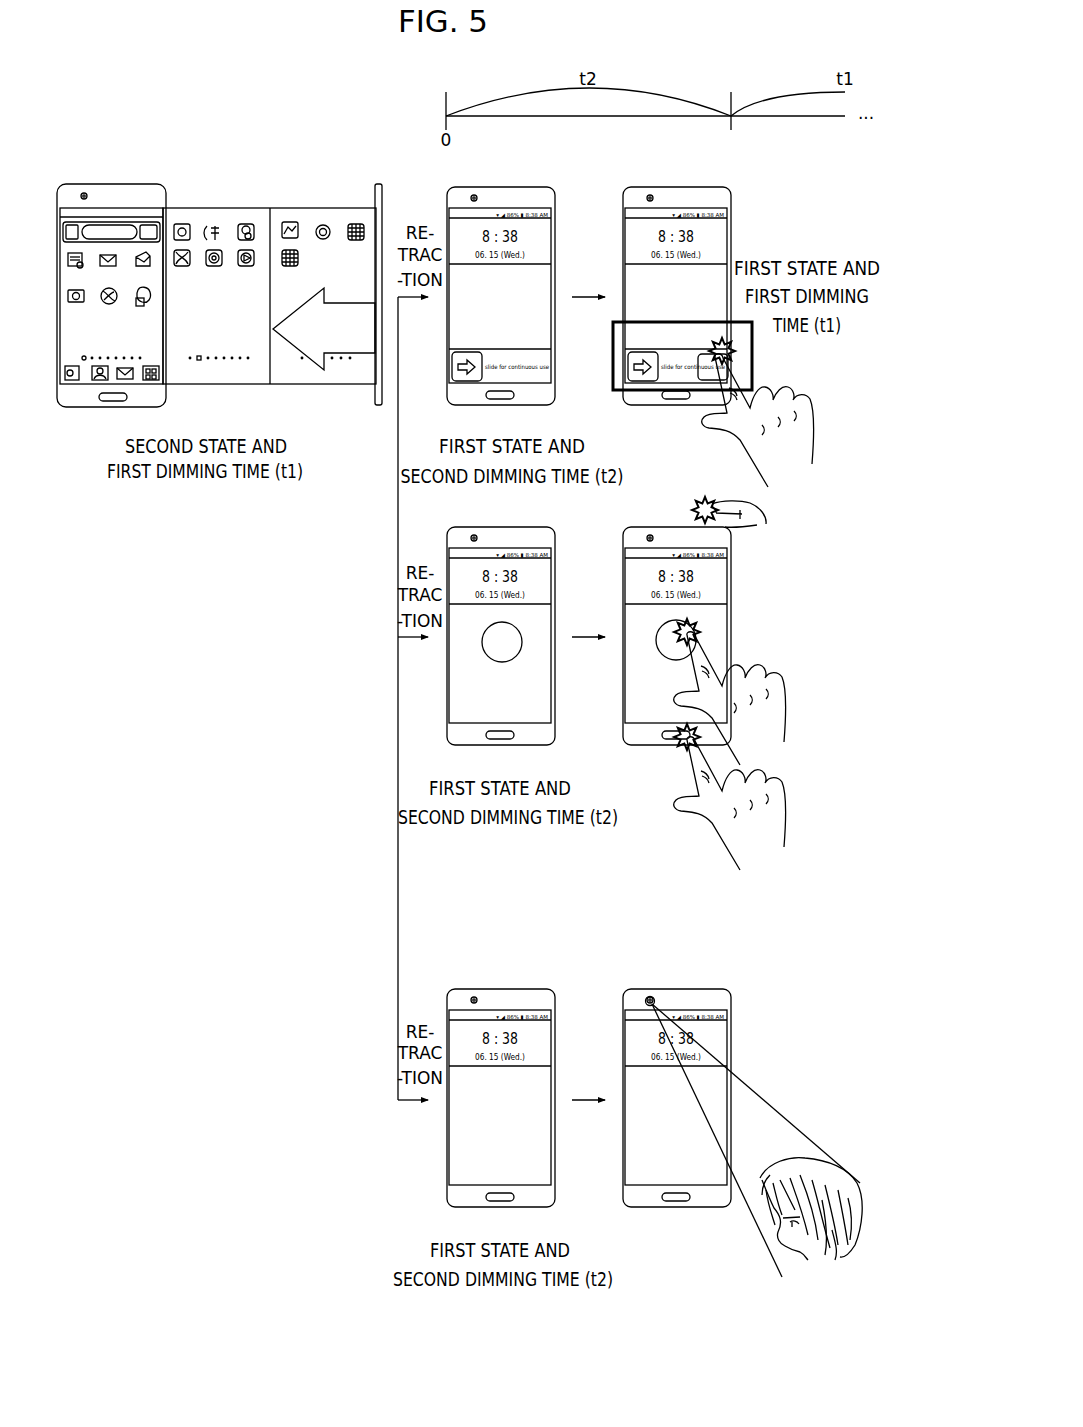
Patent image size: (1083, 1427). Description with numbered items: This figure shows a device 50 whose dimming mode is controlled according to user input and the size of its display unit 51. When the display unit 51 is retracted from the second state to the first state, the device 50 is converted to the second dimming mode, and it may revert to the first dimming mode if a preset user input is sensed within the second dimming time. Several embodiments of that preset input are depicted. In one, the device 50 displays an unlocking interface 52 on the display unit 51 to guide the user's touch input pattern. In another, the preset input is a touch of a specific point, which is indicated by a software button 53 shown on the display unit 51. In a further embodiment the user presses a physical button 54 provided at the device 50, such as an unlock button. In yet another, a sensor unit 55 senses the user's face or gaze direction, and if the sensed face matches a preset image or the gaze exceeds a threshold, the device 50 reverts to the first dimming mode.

The device 50 is at (134, 192).
The display unit 51 is at (211, 205).
The unlocking interface 52 is at (611, 360).
The software button 53 is at (520, 652).
The physical button 54 is at (724, 528).
The sensor unit 55 is at (650, 995).